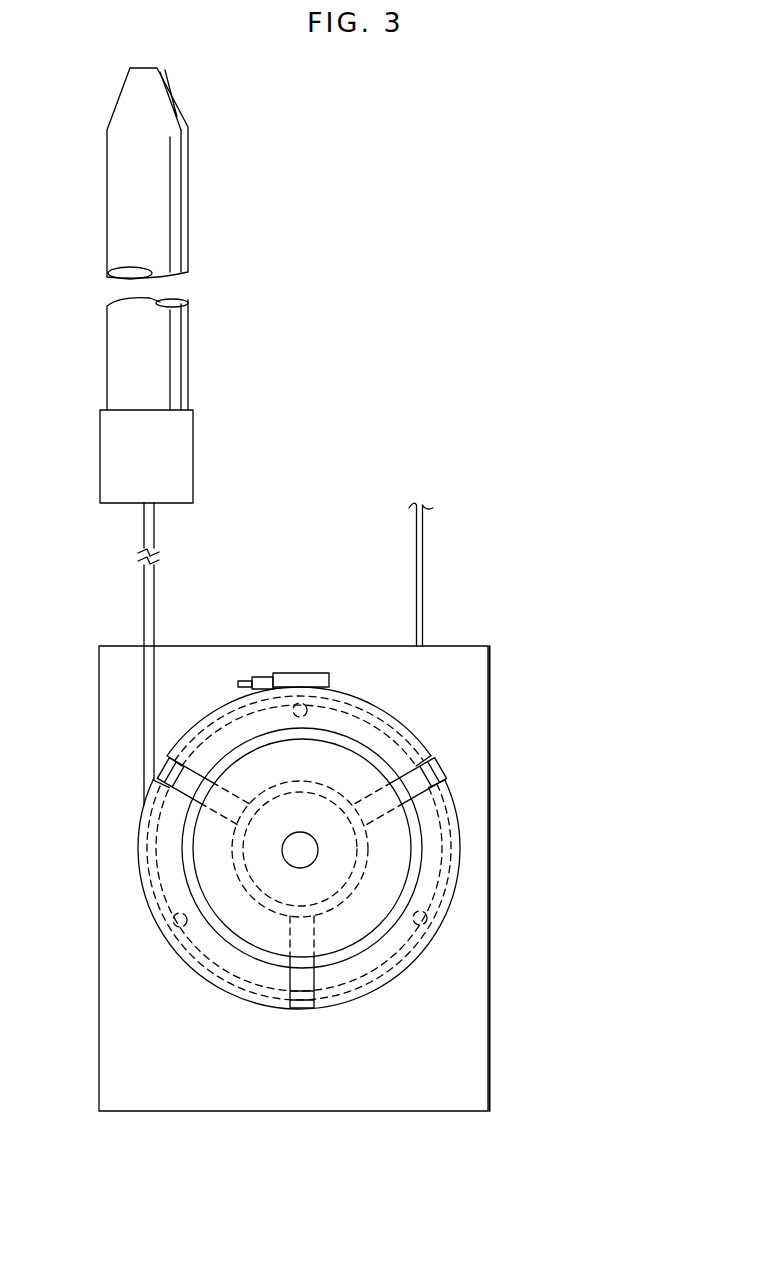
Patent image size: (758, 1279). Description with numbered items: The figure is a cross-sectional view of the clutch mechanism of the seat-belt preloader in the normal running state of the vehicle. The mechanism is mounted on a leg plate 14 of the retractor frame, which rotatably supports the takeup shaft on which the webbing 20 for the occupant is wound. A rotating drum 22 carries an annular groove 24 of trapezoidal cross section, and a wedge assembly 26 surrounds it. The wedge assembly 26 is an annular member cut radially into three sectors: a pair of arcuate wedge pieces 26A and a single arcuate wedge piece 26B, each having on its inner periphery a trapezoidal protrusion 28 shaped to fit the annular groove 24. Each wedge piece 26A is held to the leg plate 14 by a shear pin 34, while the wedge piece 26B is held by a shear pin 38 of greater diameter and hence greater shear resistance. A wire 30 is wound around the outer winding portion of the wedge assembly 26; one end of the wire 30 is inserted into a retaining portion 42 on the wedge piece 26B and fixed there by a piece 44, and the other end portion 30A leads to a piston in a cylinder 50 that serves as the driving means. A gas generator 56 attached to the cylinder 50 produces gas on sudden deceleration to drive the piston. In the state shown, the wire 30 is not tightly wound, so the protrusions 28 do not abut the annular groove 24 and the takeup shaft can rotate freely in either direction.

The leg plate 14 is at (489, 1072).
The webbing 20 is at (424, 556).
The rotating drum 22 is at (420, 838).
The annular groove 24 is at (298, 778).
The wedge assembly 26 is at (320, 955).
The arcuate wedge piece 26A is at (433, 947).
The arcuate wedge piece 26B is at (212, 714).
The protrusion 28 is at (327, 795).
The wire 30 is at (155, 618).
The other end portion of the wire 30A is at (155, 522).
The shear pin 34 is at (430, 920).
The shear pin 38 is at (360, 700).
The retaining portion 42 is at (305, 673).
The piece 44 is at (258, 677).
The cylinder 50 is at (190, 355).
The gas generator 56 is at (193, 440).